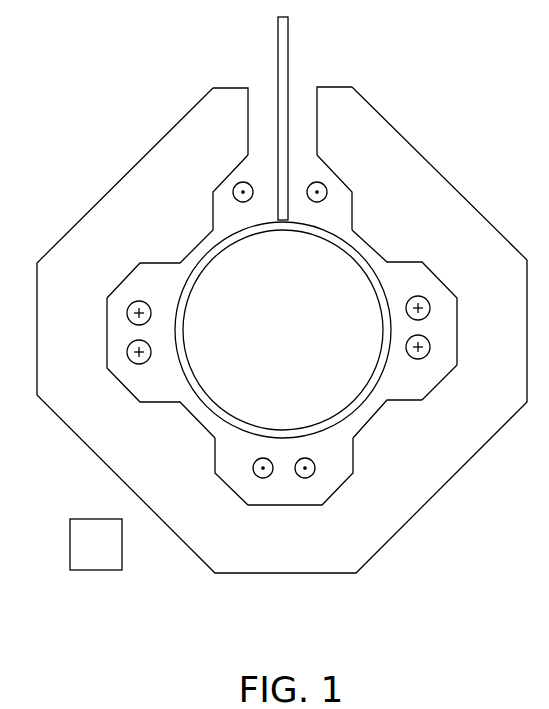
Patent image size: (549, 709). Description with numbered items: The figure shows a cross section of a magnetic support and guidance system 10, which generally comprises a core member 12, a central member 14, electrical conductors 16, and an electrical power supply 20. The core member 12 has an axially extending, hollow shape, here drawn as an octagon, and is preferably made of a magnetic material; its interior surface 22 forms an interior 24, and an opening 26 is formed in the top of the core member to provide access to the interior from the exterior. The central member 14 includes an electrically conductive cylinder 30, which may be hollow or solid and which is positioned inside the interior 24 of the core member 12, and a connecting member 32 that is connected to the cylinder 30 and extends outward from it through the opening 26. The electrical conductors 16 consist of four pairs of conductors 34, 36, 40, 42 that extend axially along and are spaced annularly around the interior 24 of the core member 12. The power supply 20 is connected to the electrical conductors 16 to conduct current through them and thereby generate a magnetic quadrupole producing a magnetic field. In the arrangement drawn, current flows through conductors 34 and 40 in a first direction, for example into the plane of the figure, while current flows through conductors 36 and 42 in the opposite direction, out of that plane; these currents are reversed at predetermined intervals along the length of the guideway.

The magnetic support and guidance system 10 is at (97, 120).
The core member 12 is at (435, 155).
The central member 14 is at (248, 480).
The electrical conductors 16 is at (265, 177).
The electrical power supply 20 is at (98, 570).
The interior surface 22 is at (446, 376).
The interior 24 is at (160, 382).
The opening 26 is at (298, 117).
The electrically conductive cylinder 30 is at (367, 275).
The connecting member 32 is at (278, 30).
The pair of conductors 34 is at (337, 203).
The pair of conductors 36 is at (423, 370).
The pair of conductors 40 is at (232, 441).
The pair of conductors 42 is at (128, 305).